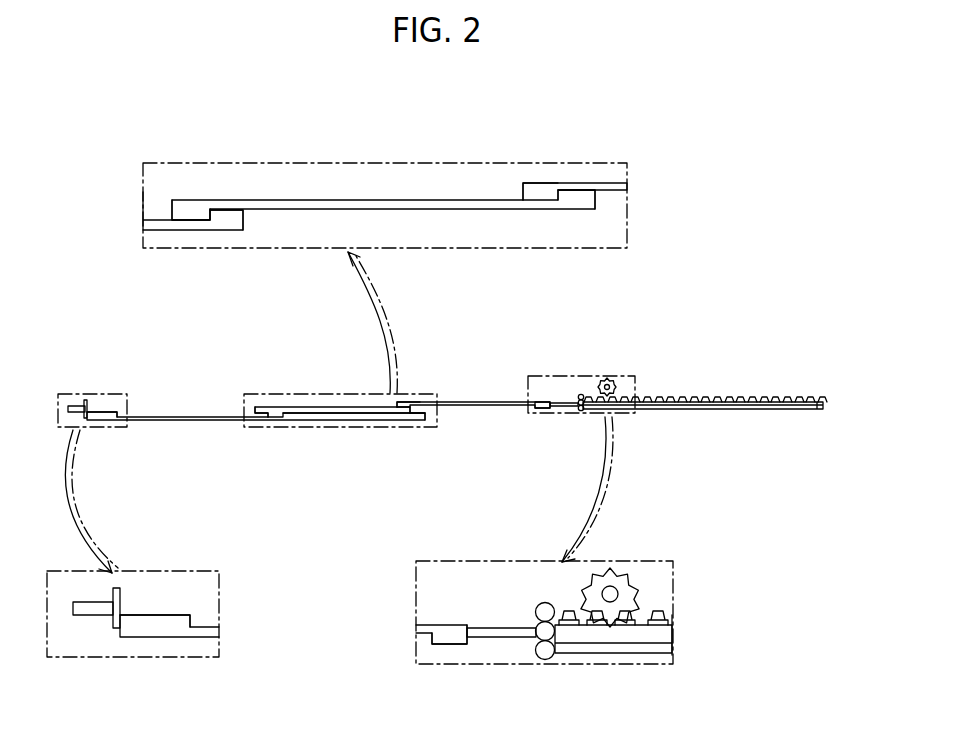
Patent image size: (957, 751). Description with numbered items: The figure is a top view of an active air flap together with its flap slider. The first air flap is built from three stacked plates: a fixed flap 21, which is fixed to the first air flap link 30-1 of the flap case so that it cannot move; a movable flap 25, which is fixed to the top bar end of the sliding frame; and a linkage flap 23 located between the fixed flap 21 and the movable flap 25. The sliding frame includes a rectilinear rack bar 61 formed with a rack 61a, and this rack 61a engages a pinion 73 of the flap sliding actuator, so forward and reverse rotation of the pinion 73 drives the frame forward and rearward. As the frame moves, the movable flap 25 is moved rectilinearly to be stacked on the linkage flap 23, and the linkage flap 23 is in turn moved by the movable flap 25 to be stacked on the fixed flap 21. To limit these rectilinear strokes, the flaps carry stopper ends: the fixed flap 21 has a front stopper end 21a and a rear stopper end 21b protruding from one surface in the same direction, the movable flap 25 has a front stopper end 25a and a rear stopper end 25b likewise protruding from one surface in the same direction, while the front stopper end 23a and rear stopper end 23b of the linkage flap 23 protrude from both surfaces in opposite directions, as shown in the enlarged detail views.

The fixed flap 21 is at (157, 218).
The front stopper end 21a is at (243, 222).
The rear stopper end 21b is at (103, 412).
The linkage flap 23 is at (380, 201).
The front stopper end 23a is at (597, 198).
The rear stopper end 23b is at (190, 200).
The movable flap 25 is at (622, 183).
The front stopper end 25a is at (540, 410).
The rear stopper end 25b is at (542, 183).
The first air flap link 30-1 is at (75, 405).
The rack bar 61 is at (722, 409).
The rack 61a is at (752, 396).
The pinion 73 is at (610, 382).